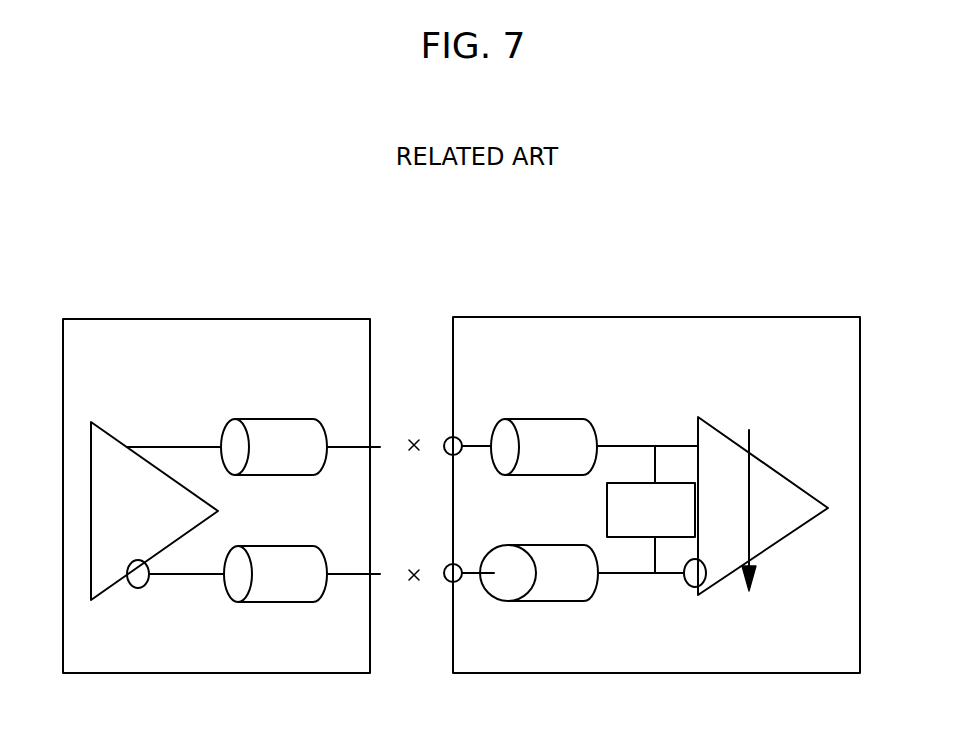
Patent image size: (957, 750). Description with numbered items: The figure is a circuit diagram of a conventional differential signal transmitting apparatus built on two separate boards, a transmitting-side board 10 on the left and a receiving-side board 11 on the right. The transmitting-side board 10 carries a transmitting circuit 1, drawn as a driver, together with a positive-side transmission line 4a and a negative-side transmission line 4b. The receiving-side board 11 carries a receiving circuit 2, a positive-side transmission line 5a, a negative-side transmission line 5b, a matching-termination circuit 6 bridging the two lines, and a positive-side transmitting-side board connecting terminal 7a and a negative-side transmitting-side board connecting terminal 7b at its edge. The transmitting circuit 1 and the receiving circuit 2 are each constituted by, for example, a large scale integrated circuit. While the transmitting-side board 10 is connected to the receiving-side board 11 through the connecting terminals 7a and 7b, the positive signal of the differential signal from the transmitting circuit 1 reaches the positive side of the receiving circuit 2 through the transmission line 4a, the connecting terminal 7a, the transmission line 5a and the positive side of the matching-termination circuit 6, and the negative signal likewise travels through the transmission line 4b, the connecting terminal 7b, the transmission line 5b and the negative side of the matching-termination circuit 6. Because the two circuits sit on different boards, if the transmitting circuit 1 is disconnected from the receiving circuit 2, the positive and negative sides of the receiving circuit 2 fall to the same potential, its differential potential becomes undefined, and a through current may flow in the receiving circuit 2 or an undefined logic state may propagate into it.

The transmitting circuit 1 is at (105, 597).
The receiving circuit 2 is at (708, 593).
The transmission line 4a is at (280, 418).
The transmission line 4b is at (280, 606).
The transmission line 5a is at (550, 413).
The transmission line 5b is at (548, 605).
The matching-termination circuit 6 is at (673, 475).
The transmitting-side board connecting terminal 7a is at (447, 437).
The transmitting-side board connecting terminal 7b is at (447, 579).
The transmitting-side board 10 is at (362, 673).
The receiving-side board 11 is at (460, 673).